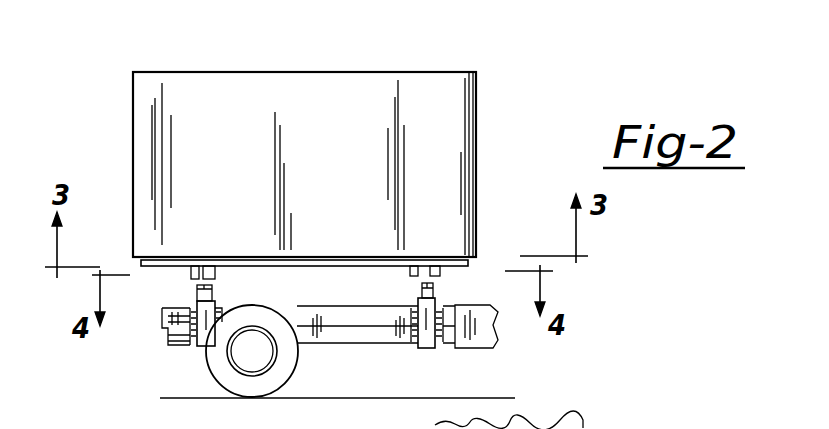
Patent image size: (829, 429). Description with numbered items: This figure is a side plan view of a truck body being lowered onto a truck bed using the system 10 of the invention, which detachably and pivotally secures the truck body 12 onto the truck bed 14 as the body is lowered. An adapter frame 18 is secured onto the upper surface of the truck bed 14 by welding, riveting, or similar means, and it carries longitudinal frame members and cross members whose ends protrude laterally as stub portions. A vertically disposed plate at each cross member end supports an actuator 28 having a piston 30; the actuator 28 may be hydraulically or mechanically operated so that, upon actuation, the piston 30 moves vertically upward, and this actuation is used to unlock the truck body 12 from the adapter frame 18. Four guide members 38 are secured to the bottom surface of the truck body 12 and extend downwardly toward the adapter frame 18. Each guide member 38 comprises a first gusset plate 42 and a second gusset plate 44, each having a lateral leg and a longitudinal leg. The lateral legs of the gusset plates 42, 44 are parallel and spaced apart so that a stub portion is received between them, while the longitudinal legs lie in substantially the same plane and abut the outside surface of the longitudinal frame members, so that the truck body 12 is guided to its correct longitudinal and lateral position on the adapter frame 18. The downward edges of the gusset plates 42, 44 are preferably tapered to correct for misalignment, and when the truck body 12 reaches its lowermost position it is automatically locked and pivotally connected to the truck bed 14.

The system 10 is at (499, 137).
The truck body 12 is at (292, 105).
The truck bed 14 is at (333, 335).
The adapter frame 18 is at (390, 313).
The actuator 28 is at (440, 348).
The piston 30 is at (433, 292).
The guide member 38 is at (237, 206).
The first gusset plate 42 is at (196, 280).
The second gusset plate 44 is at (218, 268).